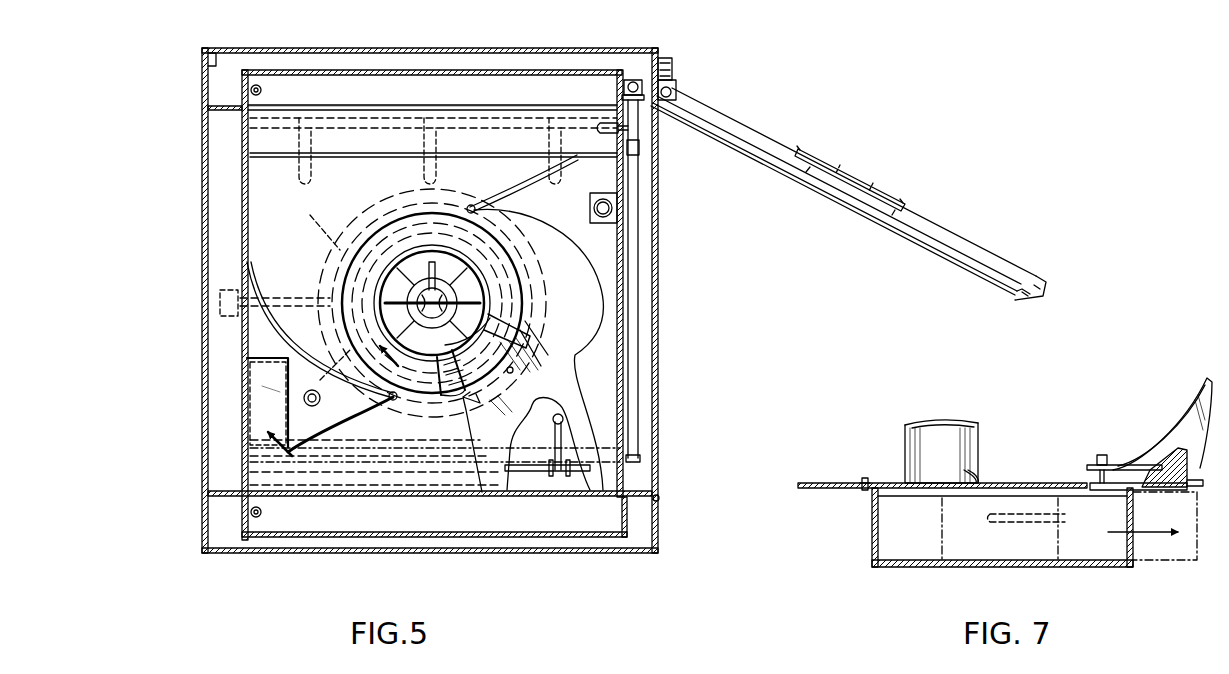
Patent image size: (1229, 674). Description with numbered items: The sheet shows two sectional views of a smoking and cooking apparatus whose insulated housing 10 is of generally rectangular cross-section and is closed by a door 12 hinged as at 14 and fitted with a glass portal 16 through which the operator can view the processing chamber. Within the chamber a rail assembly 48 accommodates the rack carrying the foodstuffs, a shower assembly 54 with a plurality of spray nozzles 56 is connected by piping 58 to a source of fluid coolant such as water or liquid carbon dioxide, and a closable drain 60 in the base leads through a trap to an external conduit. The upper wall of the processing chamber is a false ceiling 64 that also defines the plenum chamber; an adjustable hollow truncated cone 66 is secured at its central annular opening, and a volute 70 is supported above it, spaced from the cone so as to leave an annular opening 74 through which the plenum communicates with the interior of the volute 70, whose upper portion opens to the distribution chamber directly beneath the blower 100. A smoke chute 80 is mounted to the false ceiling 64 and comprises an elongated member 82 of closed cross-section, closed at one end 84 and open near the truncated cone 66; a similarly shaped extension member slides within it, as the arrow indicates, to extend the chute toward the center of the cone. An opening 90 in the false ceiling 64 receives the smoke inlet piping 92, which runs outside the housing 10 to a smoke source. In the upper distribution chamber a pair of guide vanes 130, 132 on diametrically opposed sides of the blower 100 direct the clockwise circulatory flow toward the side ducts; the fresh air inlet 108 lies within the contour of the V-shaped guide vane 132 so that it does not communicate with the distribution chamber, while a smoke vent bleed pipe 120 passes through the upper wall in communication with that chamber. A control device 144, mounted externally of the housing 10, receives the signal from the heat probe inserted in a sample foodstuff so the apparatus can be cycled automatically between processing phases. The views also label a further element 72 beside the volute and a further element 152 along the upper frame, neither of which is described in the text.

In FIG. 5, the housing 10 is at (558, 30).
In FIG. 5, the door 12 is at (748, 127).
In FIG. 5, the hinge 14 is at (674, 88).
In FIG. 5, the glass portal 16 is at (855, 188).
In FIG. 5, the rail assembly 48 is at (474, 296).
In FIG. 5, the shower assembly 54 is at (513, 478).
In FIG. 5, the spray nozzles 56 is at (562, 424).
In FIG. 5, the piping 58 is at (634, 78).
In FIG. 5, the closable drain 60 is at (445, 356).
In FIG. 7, the false ceiling 64 is at (832, 489).
In FIG. 5, the adjustable hollow truncated cone 66 is at (485, 375).
In FIG. 7, the adjustable hollow truncated cone 66 is at (1160, 454).
In FIG. 5, the volute 70 is at (534, 314).
In FIG. 7, the volute 70 is at (1199, 405).
In FIG. 5, the housing 72 is at (533, 350).
In FIG. 7, the annular opening 74 is at (1170, 452).
In FIG. 5, the smoke chute 80 is at (272, 391).
In FIG. 7, the smoke chute 80 is at (906, 577).
In FIG. 7, the elongated member 82 is at (985, 568).
In FIG. 7, the closed end 84 is at (872, 542).
In FIG. 7, the opening 90 is at (970, 478).
In FIG. 5, the smoke inlet piping 92 is at (304, 402).
In FIG. 7, the smoke inlet piping 92 is at (968, 437).
In FIG. 5, the blower 100 is at (336, 262).
In FIG. 5, the fresh air inlet 108 is at (252, 366).
In FIG. 5, the smoke vent bleed pipe 120 is at (610, 212).
In FIG. 5, the guide vane 130 is at (528, 198).
In FIG. 5, the V-shaped guide vane 132 is at (359, 403).
In FIG. 5, the control device 144 is at (672, 62).
In FIG. 5, the top rail 152 is at (295, 66).